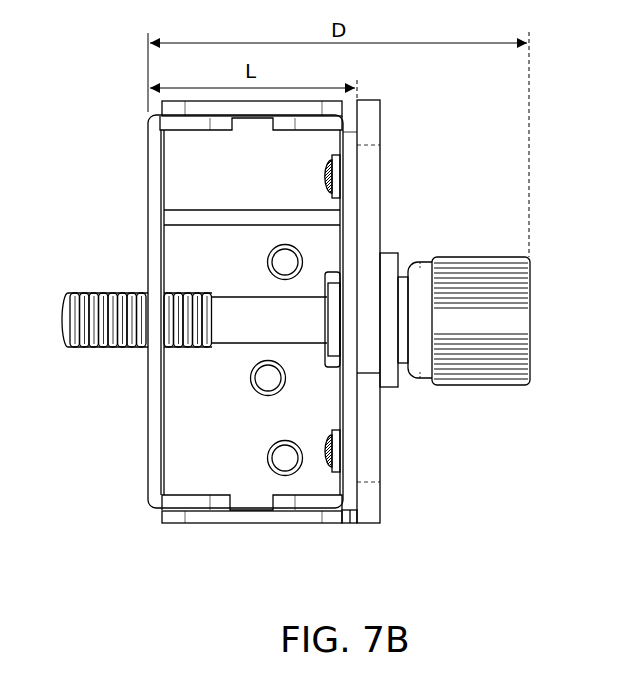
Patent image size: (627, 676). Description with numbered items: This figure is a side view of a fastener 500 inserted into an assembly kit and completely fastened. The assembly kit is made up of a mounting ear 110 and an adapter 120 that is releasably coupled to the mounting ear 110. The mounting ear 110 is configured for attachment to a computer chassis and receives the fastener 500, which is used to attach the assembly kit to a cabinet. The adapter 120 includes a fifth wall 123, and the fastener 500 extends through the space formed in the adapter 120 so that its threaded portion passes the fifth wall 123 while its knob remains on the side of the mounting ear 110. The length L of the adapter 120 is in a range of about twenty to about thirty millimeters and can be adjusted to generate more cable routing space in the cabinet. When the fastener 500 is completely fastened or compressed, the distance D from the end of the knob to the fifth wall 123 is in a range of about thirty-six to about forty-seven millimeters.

The fifth wall 123 is at (152, 173).
The adapter 120 is at (258, 487).
The mounting ear 110 is at (367, 510).
The fastener 500 is at (530, 320).